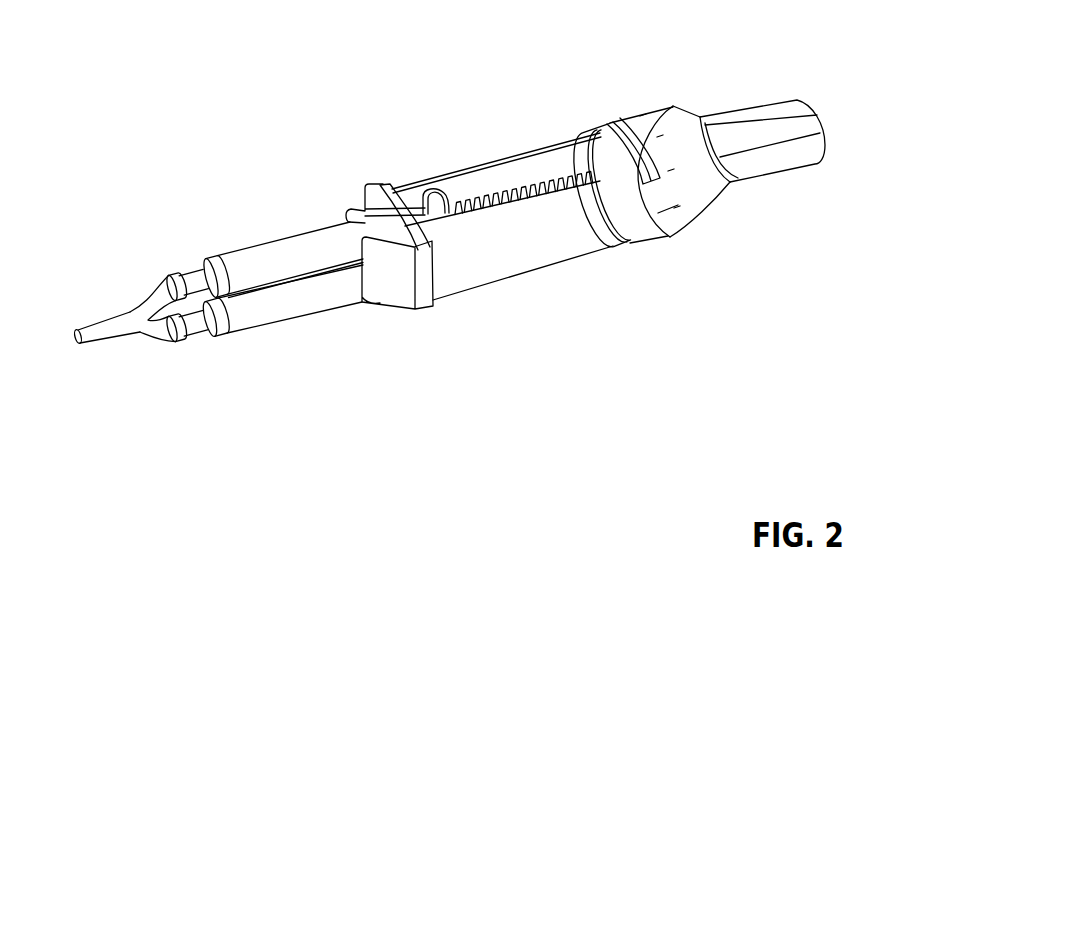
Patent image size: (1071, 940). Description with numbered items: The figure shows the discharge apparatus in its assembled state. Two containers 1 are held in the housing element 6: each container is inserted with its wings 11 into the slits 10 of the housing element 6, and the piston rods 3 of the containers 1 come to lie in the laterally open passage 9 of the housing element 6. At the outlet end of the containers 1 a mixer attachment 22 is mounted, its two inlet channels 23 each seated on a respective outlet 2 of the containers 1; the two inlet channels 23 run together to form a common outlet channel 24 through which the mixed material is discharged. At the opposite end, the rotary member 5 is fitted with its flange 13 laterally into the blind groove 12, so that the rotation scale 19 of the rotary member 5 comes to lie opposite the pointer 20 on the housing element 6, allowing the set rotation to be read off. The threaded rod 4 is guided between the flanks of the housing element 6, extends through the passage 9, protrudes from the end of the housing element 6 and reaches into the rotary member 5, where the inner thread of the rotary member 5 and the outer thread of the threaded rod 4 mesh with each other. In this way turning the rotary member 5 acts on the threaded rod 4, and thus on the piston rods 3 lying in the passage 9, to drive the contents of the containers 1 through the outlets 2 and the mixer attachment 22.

The container 1 is at (258, 263).
The outlet 2 is at (214, 264).
The piston rod 3 is at (430, 173).
The threaded rod 4 is at (511, 185).
The rotary member 5 is at (711, 72).
The housing element 6 is at (501, 299).
The laterally open passage 9 is at (470, 186).
The slit 10 is at (367, 192).
The wing 11 is at (395, 194).
The blind groove 12 is at (628, 119).
The flange 13 is at (630, 143).
The rotation scale 19 is at (705, 188).
The pointer 20 is at (668, 217).
The mixer attachment 22 is at (105, 305).
The inlet channel 23 is at (190, 280).
The common outlet channel 24 is at (100, 342).